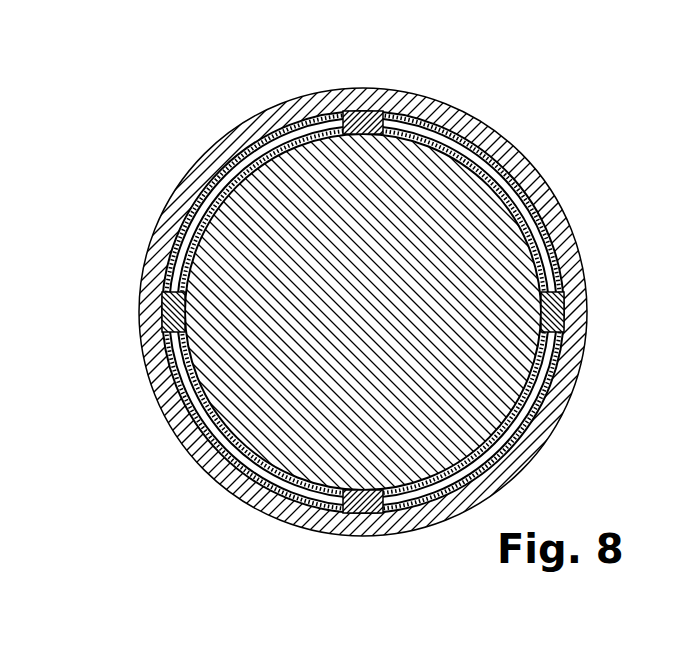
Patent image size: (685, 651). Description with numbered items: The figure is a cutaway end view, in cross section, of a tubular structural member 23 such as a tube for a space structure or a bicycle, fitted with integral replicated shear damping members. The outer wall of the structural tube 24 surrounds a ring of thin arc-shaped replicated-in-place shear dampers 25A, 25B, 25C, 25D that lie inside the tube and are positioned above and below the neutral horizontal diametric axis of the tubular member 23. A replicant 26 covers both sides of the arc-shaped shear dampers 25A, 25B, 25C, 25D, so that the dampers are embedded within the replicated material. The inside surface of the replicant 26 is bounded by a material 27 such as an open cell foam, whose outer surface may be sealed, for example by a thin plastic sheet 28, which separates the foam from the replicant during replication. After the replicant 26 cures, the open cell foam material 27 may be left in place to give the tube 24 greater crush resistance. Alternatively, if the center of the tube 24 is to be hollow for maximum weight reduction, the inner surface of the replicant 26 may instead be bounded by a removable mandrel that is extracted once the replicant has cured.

The tubular structural member 23 is at (185, 148).
The structural tube 24 is at (162, 245).
The arc-shaped replicated-in-place shear damper 25A is at (167, 272).
The arc-shaped replicated-in-place shear damper 25B is at (167, 360).
The arc-shaped replicated-in-place shear damper 25C is at (553, 348).
The arc-shaped replicated-in-place shear damper 25D is at (553, 283).
The replicant 26 is at (157, 309).
The open cell foam material 27 is at (377, 163).
The thin plastic sheet 28 is at (430, 140).